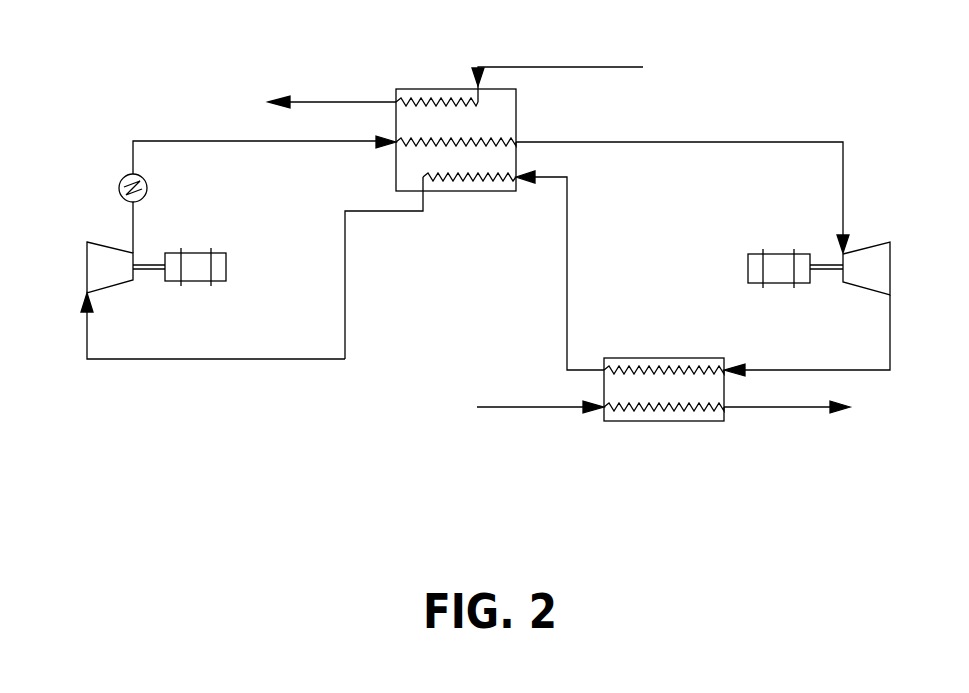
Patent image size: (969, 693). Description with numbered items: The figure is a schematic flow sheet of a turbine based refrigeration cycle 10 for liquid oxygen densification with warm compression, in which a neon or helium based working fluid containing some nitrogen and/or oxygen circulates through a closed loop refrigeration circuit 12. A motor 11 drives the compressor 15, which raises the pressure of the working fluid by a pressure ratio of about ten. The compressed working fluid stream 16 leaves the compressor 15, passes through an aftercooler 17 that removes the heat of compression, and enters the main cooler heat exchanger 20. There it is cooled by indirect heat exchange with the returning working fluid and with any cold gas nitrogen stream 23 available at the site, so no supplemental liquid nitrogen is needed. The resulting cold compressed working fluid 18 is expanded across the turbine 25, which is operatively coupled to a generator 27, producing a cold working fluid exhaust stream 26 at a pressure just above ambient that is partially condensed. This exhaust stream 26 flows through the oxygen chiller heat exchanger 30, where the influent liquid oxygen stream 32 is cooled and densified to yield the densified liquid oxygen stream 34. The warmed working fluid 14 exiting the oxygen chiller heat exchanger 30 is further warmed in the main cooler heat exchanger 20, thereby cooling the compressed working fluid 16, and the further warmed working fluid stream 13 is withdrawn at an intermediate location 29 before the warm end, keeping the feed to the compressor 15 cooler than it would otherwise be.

The turbine based refrigeration cycle 10 is at (135, 60).
The motor 11 is at (203, 283).
The closed loop refrigeration circuit 12 is at (105, 388).
The further warmed working fluid stream 13 is at (300, 359).
The working fluid stream 14 is at (570, 292).
The compressor 15 is at (108, 243).
The compressed working fluid stream 16 is at (200, 141).
The aftercooler 17 is at (123, 178).
The cold compressed working fluid 18 is at (722, 142).
The main cooler heat exchanger 20 is at (396, 89).
The cold gas nitrogen stream 23 is at (533, 67).
The turbine 25 is at (873, 242).
The cold working fluid exhaust stream 26 is at (890, 352).
The generator 27 is at (783, 283).
The intermediate location 29 is at (423, 195).
The oxygen chiller heat exchanger 30 is at (670, 423).
The liquid oxygen stream 32 is at (500, 405).
The densified liquid oxygen stream 34 is at (772, 410).